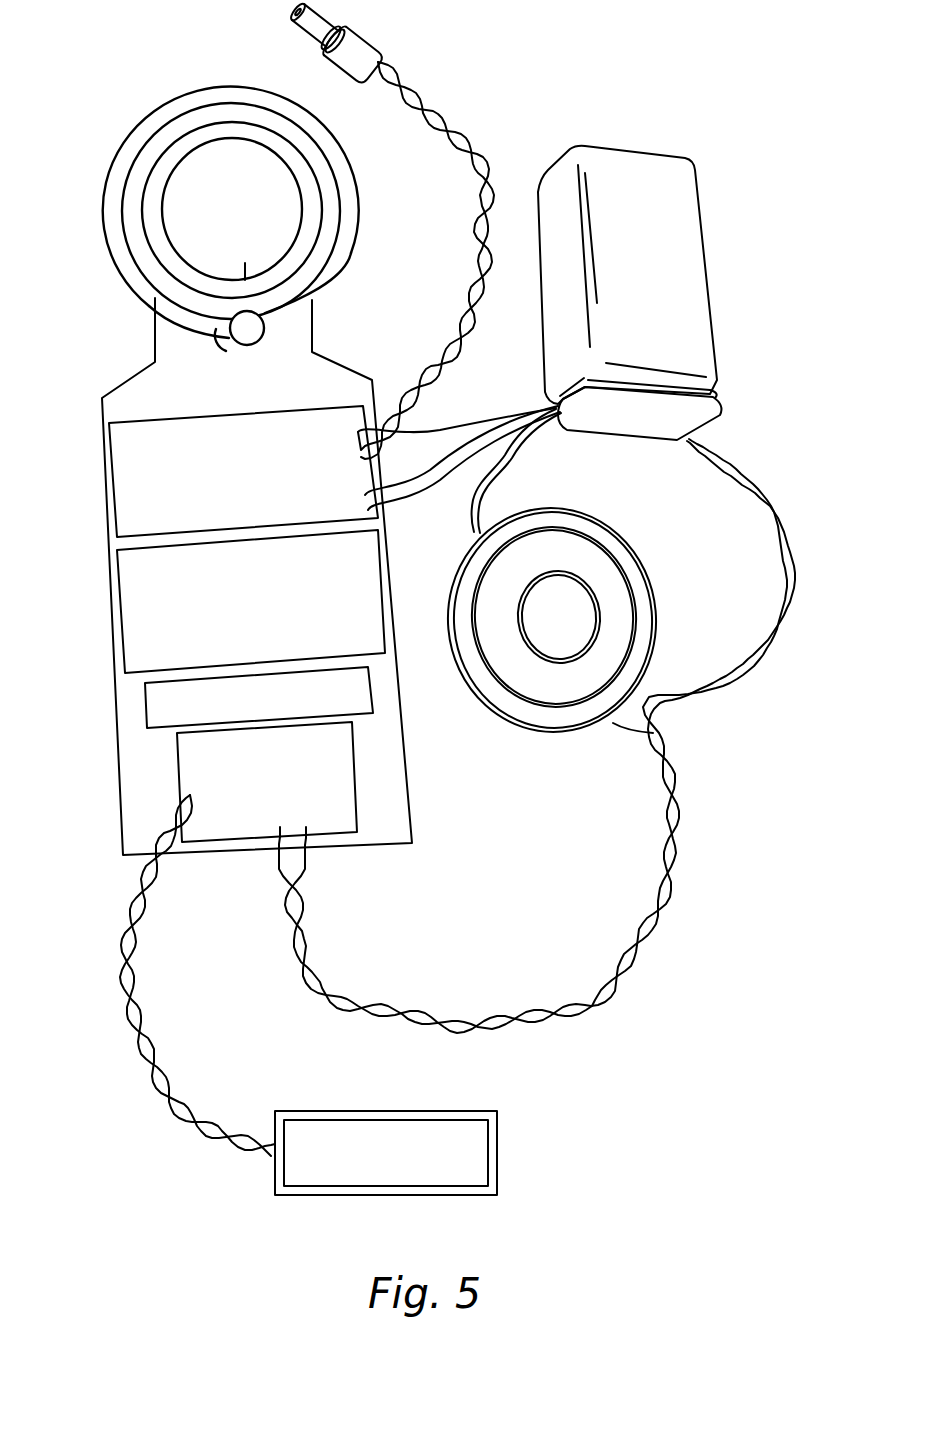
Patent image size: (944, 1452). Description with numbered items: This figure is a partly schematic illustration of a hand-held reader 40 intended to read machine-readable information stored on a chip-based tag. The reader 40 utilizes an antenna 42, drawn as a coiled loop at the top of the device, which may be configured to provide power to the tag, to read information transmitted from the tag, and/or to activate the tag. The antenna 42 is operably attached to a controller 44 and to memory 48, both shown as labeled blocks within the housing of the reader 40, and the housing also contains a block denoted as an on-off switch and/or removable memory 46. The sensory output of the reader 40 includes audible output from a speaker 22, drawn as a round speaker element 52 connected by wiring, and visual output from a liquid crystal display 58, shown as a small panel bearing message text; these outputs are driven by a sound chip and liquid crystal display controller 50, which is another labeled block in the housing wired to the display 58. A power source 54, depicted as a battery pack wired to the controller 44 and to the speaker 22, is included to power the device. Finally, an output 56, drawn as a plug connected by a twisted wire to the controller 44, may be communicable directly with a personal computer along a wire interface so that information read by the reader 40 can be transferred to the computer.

The speaker 22 is at (522, 703).
The reader 40 is at (100, 417).
The antenna 42 is at (147, 118).
The controller 44 is at (317, 428).
The on-off switch and/or removable memory 46 is at (157, 573).
The memory 48 is at (148, 705).
The sound chip and liquid crystal display controller 50 is at (327, 815).
The speaker element 52 is at (630, 561).
The power source 54 is at (685, 185).
The output 56 is at (367, 32).
The liquid crystal display 58 is at (497, 1150).